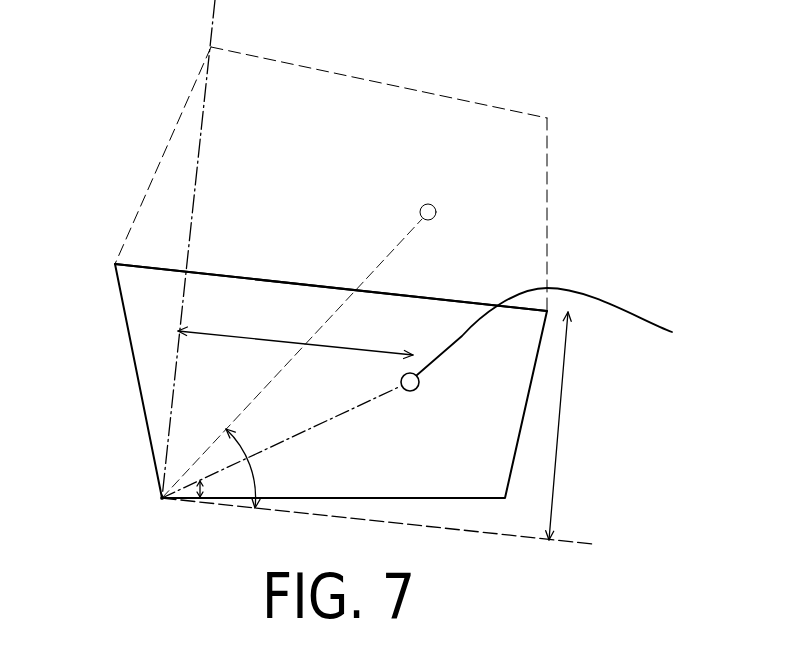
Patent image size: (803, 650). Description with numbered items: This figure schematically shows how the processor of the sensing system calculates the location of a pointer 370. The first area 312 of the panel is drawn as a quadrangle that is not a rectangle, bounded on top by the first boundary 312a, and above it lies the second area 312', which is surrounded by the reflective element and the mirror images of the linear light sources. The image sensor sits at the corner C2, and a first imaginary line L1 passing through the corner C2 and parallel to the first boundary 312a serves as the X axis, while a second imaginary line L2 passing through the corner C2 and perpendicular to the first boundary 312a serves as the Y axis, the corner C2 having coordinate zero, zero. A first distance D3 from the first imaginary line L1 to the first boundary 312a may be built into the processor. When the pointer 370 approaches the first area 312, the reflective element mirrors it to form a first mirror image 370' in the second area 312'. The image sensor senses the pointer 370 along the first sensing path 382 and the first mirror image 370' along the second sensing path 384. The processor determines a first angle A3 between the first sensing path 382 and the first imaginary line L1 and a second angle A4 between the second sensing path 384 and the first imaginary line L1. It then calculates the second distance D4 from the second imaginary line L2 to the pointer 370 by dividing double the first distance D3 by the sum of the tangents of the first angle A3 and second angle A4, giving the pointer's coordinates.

The first area 312 is at (342, 430).
The first boundary 312a is at (435, 298).
The second area 312' is at (304, 179).
The pointer 370 is at (561, 339).
The first mirror image 370' is at (536, 197).
The second sensing path 384 is at (241, 412).
The first sensing path 382 is at (307, 429).
The second imaginary line L2 is at (210, 25).
The first imaginary line L1 is at (580, 542).
The corner C2 is at (162, 498).
The second distance D4 is at (216, 336).
The first distance D3 is at (561, 426).
The first angle A3 is at (203, 492).
The second angle A4 is at (257, 490).